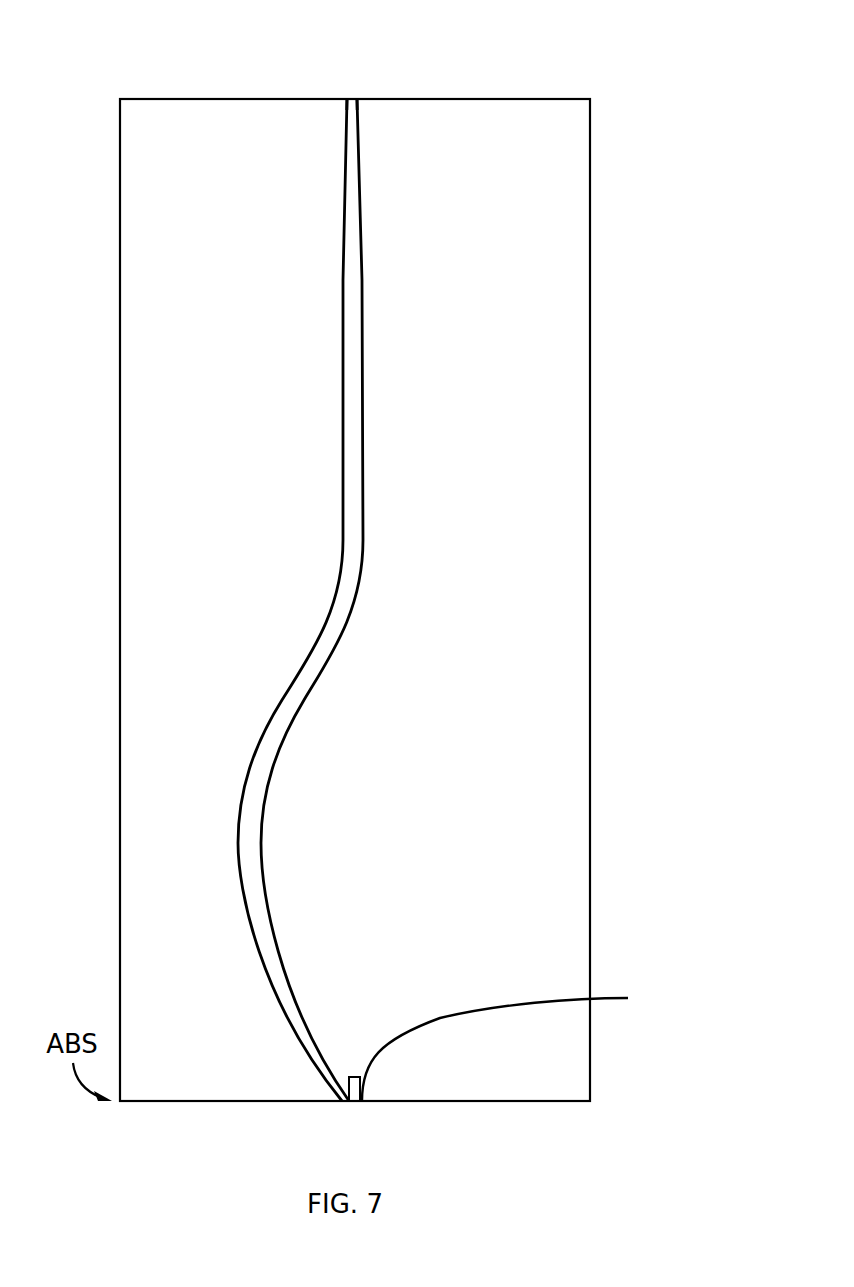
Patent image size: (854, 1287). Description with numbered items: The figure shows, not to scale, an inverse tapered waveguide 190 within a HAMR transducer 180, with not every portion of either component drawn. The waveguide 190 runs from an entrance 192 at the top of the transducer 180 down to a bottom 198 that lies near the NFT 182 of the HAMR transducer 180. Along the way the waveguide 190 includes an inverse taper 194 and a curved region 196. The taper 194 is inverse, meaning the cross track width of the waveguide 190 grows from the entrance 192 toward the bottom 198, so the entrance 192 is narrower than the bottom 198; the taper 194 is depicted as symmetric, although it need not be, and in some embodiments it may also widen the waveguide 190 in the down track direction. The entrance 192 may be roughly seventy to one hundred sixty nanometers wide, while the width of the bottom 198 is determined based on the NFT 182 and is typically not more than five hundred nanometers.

The HAMR transducer 180 is at (368, 36).
The NFT 182 is at (525, 1042).
The inverse tapered waveguide 190 is at (355, 570).
The entrance 192 is at (358, 82).
The inverse taper 194 is at (306, 378).
The curved region 196 is at (212, 811).
The bottom 198 is at (359, 1125).